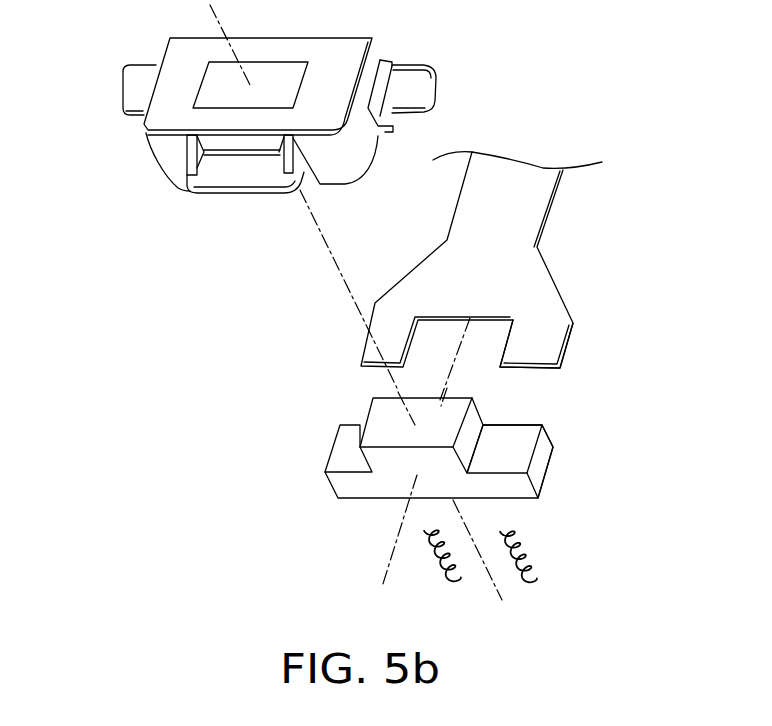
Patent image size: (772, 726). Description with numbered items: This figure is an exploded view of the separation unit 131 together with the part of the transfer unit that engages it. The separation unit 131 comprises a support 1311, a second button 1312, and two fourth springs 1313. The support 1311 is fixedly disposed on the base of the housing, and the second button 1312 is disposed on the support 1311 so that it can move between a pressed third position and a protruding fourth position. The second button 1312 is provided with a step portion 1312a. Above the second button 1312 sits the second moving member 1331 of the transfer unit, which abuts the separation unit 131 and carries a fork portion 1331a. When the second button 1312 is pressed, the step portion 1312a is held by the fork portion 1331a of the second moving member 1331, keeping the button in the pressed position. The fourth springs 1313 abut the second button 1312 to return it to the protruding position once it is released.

The separation unit 131 is at (249, 548).
The support 1311 is at (175, 158).
The second button 1312 is at (390, 424).
The step portion 1312a is at (520, 448).
The fourth springs 1313 is at (420, 561).
The second moving member 1331 is at (533, 208).
The fork portion 1331a is at (552, 340).